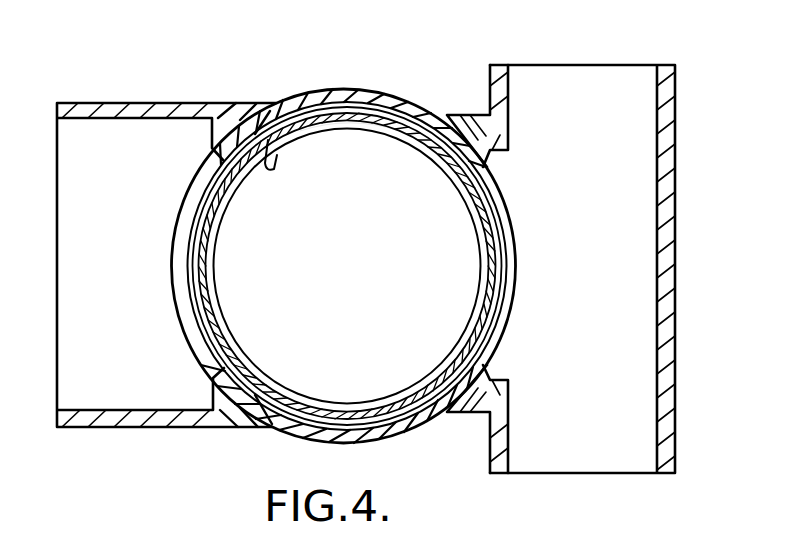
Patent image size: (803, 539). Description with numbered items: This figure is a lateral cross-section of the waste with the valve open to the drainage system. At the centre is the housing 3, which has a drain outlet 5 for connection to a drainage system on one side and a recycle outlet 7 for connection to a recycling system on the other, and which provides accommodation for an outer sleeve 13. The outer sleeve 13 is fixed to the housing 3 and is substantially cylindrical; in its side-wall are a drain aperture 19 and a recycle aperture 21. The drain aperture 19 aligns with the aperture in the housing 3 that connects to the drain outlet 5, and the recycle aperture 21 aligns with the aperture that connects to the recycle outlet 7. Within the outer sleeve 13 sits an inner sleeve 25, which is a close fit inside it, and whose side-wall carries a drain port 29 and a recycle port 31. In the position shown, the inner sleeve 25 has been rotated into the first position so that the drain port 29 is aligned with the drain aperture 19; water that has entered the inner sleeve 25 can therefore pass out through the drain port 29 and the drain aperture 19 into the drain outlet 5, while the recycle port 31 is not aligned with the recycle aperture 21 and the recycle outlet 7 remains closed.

The housing 3 is at (347, 87).
The drain outlet 5 is at (149, 129).
The recycle outlet 7 is at (620, 285).
The outer sleeve 13 is at (432, 107).
The drain aperture 19 is at (193, 286).
The recycle aperture 21 is at (495, 180).
The inner sleeve 25 is at (268, 140).
The drain port 29 is at (212, 262).
The recycle port 31 is at (347, 128).